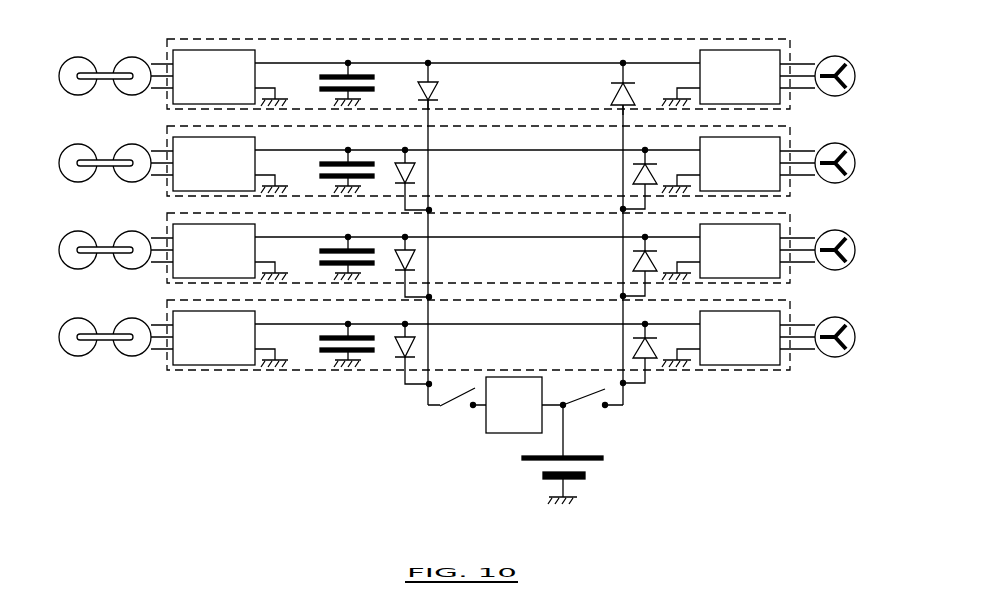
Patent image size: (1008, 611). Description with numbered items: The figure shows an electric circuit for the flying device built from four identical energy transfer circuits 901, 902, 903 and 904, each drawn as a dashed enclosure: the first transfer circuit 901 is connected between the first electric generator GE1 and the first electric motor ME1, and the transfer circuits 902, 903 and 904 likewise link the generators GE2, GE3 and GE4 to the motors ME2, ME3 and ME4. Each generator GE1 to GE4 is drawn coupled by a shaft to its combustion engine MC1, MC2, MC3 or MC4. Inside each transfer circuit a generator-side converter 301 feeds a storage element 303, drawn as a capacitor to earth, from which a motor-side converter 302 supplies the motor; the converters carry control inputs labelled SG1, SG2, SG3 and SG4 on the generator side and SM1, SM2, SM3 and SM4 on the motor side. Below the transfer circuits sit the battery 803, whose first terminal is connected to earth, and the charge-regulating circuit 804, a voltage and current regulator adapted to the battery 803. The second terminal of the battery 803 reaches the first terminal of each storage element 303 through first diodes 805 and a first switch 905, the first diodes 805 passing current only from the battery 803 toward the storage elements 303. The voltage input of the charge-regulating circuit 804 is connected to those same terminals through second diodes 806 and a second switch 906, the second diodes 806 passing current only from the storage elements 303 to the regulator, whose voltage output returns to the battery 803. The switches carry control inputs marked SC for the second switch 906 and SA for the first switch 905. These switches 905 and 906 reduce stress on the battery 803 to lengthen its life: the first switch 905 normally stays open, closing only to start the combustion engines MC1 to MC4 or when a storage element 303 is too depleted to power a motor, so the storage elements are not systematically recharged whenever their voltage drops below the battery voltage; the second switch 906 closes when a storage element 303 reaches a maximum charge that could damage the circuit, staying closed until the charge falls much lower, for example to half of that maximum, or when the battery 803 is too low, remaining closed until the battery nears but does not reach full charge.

The generator-side converter 301 is at (256, 51).
The motor-side converter 302 is at (700, 50).
The storage element 303 is at (374, 76).
The battery 803 is at (604, 459).
The charge-regulating circuit 804 is at (486, 432).
The first diodes 805 is at (611, 80).
The second diodes 806 is at (440, 88).
The first transfer circuit 901 is at (790, 42).
The second transfer circuit 902 is at (790, 129).
The third transfer circuit 903 is at (790, 216).
The fourth transfer circuit 904 is at (790, 303).
The first switch 905 is at (585, 432).
The second switch 906 is at (447, 429).
The combustion engine MC1 is at (67, 92).
The combustion engine MC2 is at (67, 179).
The combustion engine MC3 is at (67, 266).
The combustion engine MC4 is at (67, 353).
The electric generator GE1 is at (122, 94).
The electric generator GE2 is at (122, 181).
The electric generator GE3 is at (122, 268).
The electric generator GE4 is at (122, 355).
The electric motor ME1 is at (847, 95).
The electric motor ME2 is at (847, 182).
The electric motor ME3 is at (847, 269).
The electric motor ME4 is at (847, 356).
The generator control signal SG1 is at (214, 50).
The generator control signal SG2 is at (214, 137).
The generator control signal SG3 is at (214, 224).
The generator control signal SG4 is at (214, 311).
The motor control signal SM1 is at (740, 50).
The motor control signal SM2 is at (740, 137).
The motor control signal SM3 is at (740, 224).
The motor control signal SM4 is at (740, 311).
The switch control signal SC is at (455, 392).
The switch control signal SA is at (587, 392).